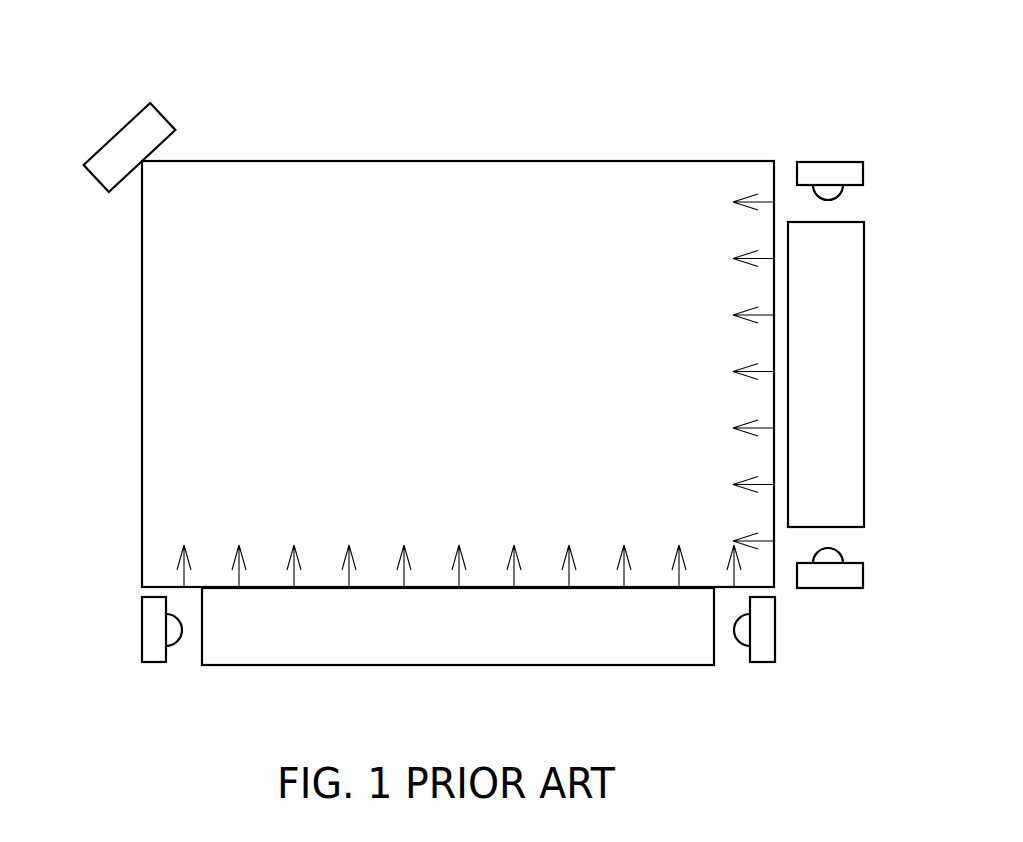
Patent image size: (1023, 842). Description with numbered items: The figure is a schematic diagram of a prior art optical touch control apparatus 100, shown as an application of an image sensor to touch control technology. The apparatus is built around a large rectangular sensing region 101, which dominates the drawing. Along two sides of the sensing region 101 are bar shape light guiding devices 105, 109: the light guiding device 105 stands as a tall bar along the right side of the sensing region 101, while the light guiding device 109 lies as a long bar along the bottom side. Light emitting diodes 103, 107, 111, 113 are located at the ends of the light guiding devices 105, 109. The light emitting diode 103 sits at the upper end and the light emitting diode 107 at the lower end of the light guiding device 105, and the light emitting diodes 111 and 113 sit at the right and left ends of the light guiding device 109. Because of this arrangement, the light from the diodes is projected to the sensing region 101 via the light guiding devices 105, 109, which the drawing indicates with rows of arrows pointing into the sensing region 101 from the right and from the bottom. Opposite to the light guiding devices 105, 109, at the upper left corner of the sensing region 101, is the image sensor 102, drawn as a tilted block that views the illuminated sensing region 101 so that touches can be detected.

The optical touch control apparatus 100 is at (877, 110).
The sensing region 101 is at (702, 161).
The image sensor 102 is at (92, 183).
The light emitting diode 103 is at (864, 172).
The bar shape light guiding device 105 is at (864, 373).
The light emitting diode 107 is at (864, 575).
The bar shape light guiding device 109 is at (458, 665).
The light emitting diode 111 is at (775, 630).
The light emitting diode 113 is at (140, 628).